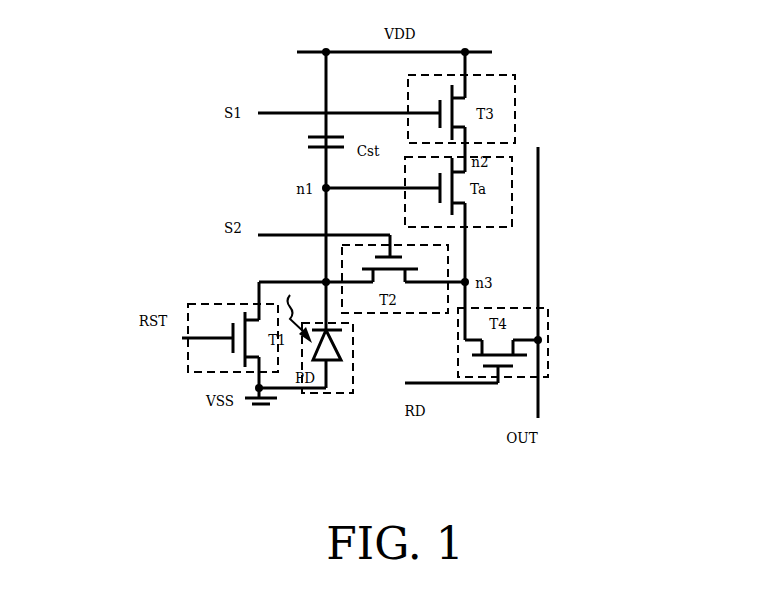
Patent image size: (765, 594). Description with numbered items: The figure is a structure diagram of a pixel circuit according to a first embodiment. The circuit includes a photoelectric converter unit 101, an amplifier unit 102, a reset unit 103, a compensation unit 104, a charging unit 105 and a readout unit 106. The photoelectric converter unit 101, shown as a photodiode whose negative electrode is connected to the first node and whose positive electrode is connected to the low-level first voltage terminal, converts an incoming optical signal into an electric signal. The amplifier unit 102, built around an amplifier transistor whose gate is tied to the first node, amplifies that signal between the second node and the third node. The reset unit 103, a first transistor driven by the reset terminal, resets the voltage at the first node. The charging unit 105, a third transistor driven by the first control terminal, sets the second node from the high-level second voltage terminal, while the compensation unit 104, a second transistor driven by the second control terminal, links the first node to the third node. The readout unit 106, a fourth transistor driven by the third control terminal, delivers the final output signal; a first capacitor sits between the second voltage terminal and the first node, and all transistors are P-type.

The photoelectric converter unit 101 is at (339, 386).
The amplifier unit 102 is at (500, 212).
The reset unit 103 is at (208, 353).
The compensation unit 104 is at (432, 260).
The charging unit 105 is at (500, 87).
The readout unit 106 is at (542, 315).